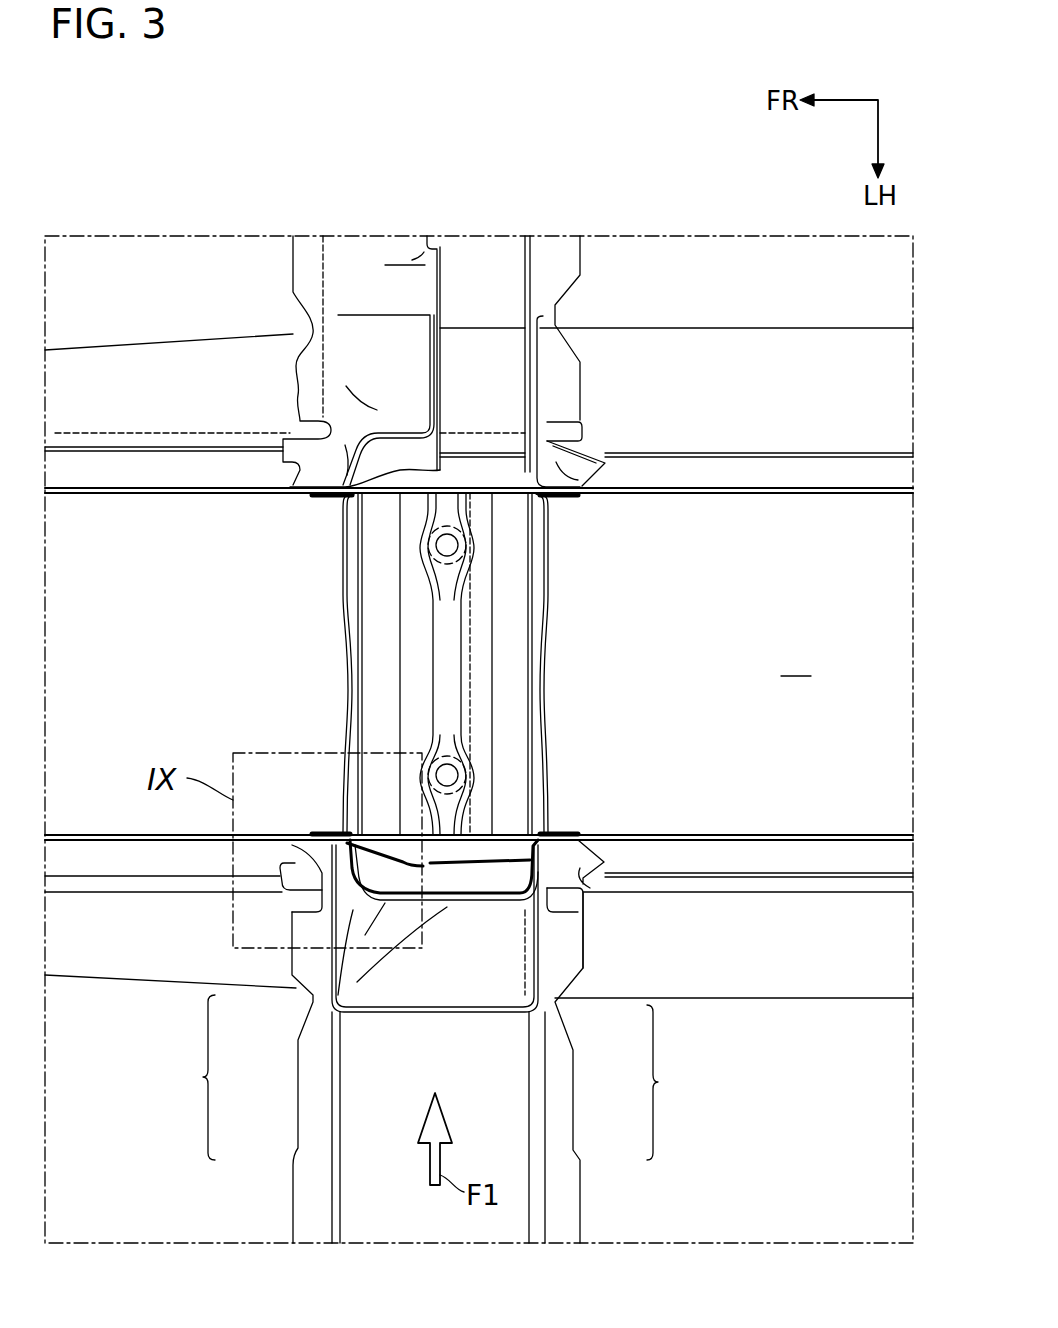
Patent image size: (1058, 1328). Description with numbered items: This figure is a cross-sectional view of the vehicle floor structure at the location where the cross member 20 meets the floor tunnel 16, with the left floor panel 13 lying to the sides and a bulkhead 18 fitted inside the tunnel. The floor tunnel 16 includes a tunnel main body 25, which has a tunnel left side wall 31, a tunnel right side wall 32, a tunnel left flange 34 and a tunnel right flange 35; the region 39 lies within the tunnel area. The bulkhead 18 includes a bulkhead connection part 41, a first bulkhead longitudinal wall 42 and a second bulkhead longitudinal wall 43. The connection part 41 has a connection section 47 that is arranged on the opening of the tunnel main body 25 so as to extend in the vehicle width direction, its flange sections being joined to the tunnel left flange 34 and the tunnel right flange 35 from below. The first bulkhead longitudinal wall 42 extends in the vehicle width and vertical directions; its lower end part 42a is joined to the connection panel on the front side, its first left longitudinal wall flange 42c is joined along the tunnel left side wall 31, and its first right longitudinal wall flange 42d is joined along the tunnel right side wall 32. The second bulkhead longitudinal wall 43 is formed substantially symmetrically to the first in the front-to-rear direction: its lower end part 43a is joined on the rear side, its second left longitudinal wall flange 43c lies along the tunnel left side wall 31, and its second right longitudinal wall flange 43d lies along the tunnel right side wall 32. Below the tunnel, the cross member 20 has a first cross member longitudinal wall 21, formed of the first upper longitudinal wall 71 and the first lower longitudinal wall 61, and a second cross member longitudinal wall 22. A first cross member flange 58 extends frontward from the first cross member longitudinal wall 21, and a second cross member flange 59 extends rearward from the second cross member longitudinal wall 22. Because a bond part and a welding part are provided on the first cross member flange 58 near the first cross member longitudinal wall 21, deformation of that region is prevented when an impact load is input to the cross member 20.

The left floor panel 13 is at (856, 275).
The floor tunnel 16 is at (715, 466).
The bulkhead 18 is at (443, 664).
The cross member 20 is at (336, 284).
The first cross member longitudinal wall 21 is at (191, 1077).
The second cross member longitudinal wall 22 is at (675, 1082).
The tunnel main body 25 is at (806, 480).
The tunnel left side wall 31 is at (800, 858).
The tunnel right side wall 32 is at (862, 467).
The tunnel left flange 34 is at (862, 975).
The tunnel right flange 35 is at (666, 360).
The floor opening region 39 is at (799, 659).
The bulkhead connection part 41 is at (484, 658).
The first bulkhead longitudinal wall 42 is at (331, 664).
The lower end part of the first bulkhead longitudinal wall 42a is at (378, 668).
The first left longitudinal wall flange 42c is at (325, 830).
The first right longitudinal wall flange 42d is at (322, 500).
The second bulkhead longitudinal wall 43 is at (559, 664).
The lower end part of the second bulkhead longitudinal wall 43a is at (510, 582).
The second left longitudinal wall flange 43c is at (592, 840).
The second right longitudinal wall flange 43d is at (562, 500).
The connection section 47 is at (482, 684).
The first cross member flange 58 is at (326, 858).
The second cross member flange 59 is at (578, 870).
The first lower longitudinal wall 61 is at (335, 1120).
The first upper longitudinal wall 71 is at (330, 985).